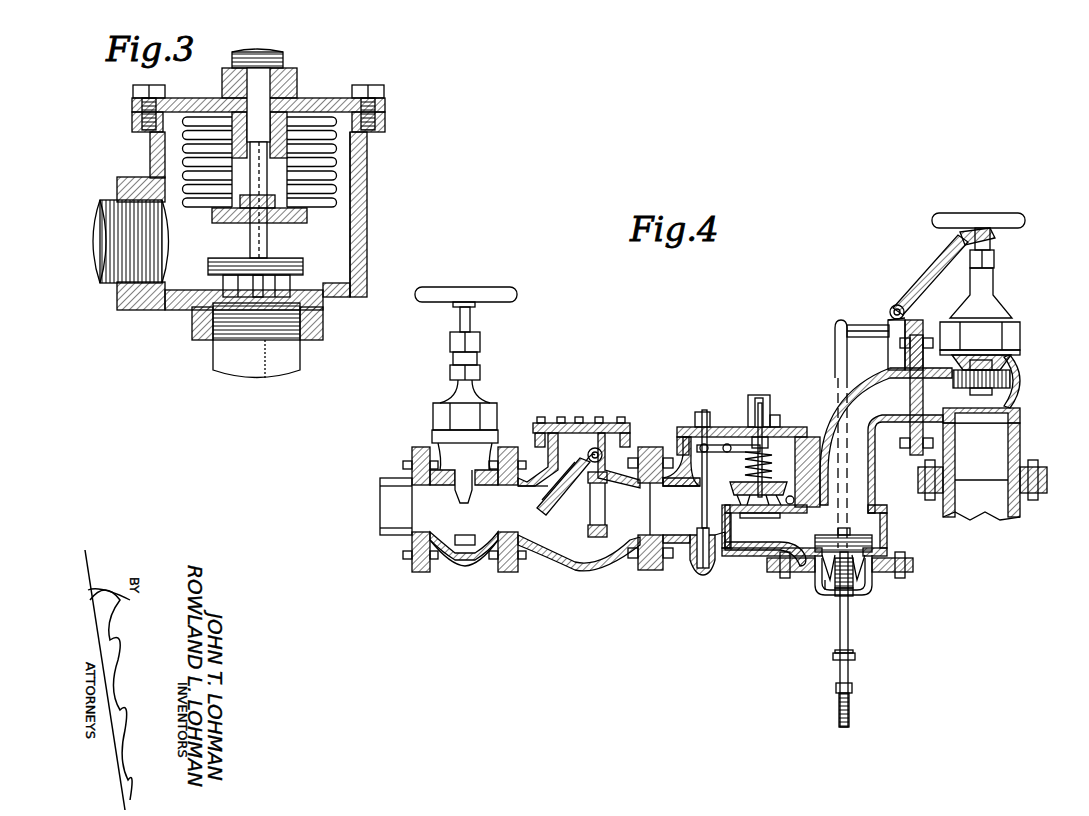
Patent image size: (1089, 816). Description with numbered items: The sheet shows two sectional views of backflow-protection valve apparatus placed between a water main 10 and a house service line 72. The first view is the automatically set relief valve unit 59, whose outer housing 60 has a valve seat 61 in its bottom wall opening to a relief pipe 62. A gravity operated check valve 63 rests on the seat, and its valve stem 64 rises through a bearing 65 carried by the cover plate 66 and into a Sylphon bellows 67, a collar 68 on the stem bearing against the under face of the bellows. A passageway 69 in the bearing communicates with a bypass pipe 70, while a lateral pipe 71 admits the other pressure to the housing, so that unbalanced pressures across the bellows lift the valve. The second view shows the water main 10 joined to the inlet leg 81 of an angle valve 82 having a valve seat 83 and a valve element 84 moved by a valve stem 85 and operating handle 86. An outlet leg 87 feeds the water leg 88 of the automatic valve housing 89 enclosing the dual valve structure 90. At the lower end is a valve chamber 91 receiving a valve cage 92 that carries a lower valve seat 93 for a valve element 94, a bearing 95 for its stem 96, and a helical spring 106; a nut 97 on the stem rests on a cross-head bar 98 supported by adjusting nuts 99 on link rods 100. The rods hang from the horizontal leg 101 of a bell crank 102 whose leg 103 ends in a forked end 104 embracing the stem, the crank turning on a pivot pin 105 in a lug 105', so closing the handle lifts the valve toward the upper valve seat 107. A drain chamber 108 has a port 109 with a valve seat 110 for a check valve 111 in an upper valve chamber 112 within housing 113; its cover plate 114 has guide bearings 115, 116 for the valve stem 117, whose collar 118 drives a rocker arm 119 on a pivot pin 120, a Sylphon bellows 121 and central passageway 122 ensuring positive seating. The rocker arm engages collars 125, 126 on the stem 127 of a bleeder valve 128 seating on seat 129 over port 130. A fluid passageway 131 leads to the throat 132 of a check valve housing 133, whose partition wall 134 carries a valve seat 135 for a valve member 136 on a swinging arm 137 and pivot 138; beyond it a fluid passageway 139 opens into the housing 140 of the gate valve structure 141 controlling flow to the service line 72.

In FIG. 3, the unit 59 is at (145, 150).
In FIG. 3, the outer housing 60 is at (367, 185).
In FIG. 3, the valve seat 61 is at (296, 282).
In FIG. 3, the relief pipe 62 is at (300, 348).
In FIG. 3, the gravity operated check valve 63 is at (292, 260).
In FIG. 3, the valve stem 64 is at (252, 230).
In FIG. 3, the bearing 65 is at (225, 115).
In FIG. 3, the cover plate 66 is at (385, 105).
In FIG. 3, the Sylphon bellows 67 is at (335, 160).
In FIG. 3, the collar 68 is at (215, 222).
In FIG. 3, the passageway 69 is at (262, 102).
In FIG. 3, the bypass pipe 70 is at (283, 60).
In FIG. 3, the lateral pipe 71 is at (116, 283).
In FIG. 4, the house service line 72 is at (395, 512).
In FIG. 4, the gate valve structure 141 is at (420, 435).
In FIG. 4, the fluid passageway 139 is at (490, 548).
In FIG. 4, the housing 140 is at (450, 560).
In FIG. 4, the check valve housing 133 is at (597, 560).
In FIG. 4, the partition wall 134 is at (585, 572).
In FIG. 4, the valve seat 135 is at (590, 560).
In FIG. 4, the valve member 136 is at (556, 505).
In FIG. 4, the swinging arm 137 is at (575, 423).
In FIG. 4, the pivot 138 is at (596, 448).
In FIG. 4, the fluid passageway 131 is at (655, 548).
In FIG. 4, the bleeder valve 128 is at (672, 548).
In FIG. 4, the throat 132 is at (645, 575).
In FIG. 4, the seat 129 is at (680, 578).
In FIG. 4, the port 130 is at (698, 578).
In FIG. 4, the upper valve chamber 112 is at (815, 430).
In FIG. 4, the collar 125 is at (682, 440).
In FIG. 4, the collar 126 is at (678, 428).
In FIG. 4, the stem 127 is at (695, 420).
In FIG. 4, the guide bearing 116 is at (702, 408).
In FIG. 4, the housing 113 is at (745, 420).
In FIG. 4, the cover plate 114 is at (752, 425).
In FIG. 4, the guide bearing 115 is at (762, 395).
In FIG. 4, the valve stem 117 is at (763, 438).
In FIG. 4, the collar 118 is at (785, 428).
In FIG. 4, the rocker arm 119 is at (745, 452).
In FIG. 4, the pivot pin 120 is at (735, 486).
In FIG. 4, the Sylphon bellows 121 is at (772, 462).
In FIG. 4, the check valve 111 is at (738, 503).
In FIG. 4, the central passageway 122 is at (747, 516).
In FIG. 4, the valve seat 110 is at (790, 513).
In FIG. 4, the drain chamber 108 is at (758, 550).
In FIG. 4, the port 109 is at (730, 548).
In FIG. 4, the link rods 100 is at (835, 348).
In FIG. 4, the horizontal leg 101 is at (850, 320).
In FIG. 4, the bell crank 102 is at (888, 298).
In FIG. 4, the leg 103 is at (940, 258).
In FIG. 4, the forked end 104 is at (993, 240).
In FIG. 4, the pivot pin 105 is at (906, 290).
In FIG. 4, the lug 105' is at (926, 311).
In FIG. 4, the operating handle 86 is at (1005, 215).
In FIG. 4, the valve stem 85 is at (995, 255).
In FIG. 4, the angle valve 82 is at (1020, 390).
In FIG. 4, the valve element 84 is at (1010, 383).
In FIG. 4, the valve seat 83 is at (1015, 420).
In FIG. 4, the inlet leg 81 is at (1012, 440).
In FIG. 4, the water main 10 is at (1005, 512).
In FIG. 4, the outlet leg 87 is at (935, 400).
In FIG. 4, the water leg 88 is at (862, 430).
In FIG. 4, the upper valve seat 107 is at (872, 500).
In FIG. 4, the automatic valve housing 89 is at (882, 515).
In FIG. 4, the automatic dual valve structure 90 is at (888, 530).
In FIG. 4, the valve chamber 91 is at (888, 548).
In FIG. 4, the valve cage 92 is at (872, 585).
In FIG. 4, the valve seat 93 is at (875, 578).
In FIG. 4, the valve element 94 is at (818, 572).
In FIG. 4, the bearing 95 is at (852, 597).
In FIG. 4, the stem 96 is at (842, 636).
In FIG. 4, the nut 97 is at (853, 686).
In FIG. 4, the cross-head bar 98 is at (853, 658).
In FIG. 4, the adjusting nuts 99 is at (853, 650).
In FIG. 4, the helical spring 106 is at (830, 585).